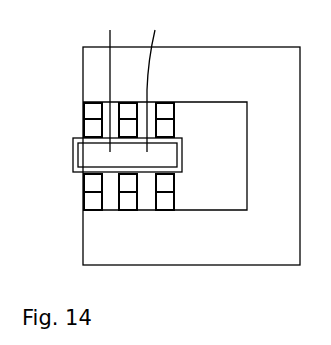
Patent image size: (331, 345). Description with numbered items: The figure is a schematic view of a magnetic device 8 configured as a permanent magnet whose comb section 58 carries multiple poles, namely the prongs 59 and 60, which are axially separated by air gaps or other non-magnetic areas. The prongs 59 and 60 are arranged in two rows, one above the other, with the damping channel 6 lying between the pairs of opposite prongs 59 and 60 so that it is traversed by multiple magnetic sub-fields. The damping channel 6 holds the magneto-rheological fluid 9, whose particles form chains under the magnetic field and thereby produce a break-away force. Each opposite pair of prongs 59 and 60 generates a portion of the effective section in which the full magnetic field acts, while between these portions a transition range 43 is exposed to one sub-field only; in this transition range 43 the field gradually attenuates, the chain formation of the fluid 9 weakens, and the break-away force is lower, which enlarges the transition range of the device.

The magnetic device 8 is at (83, 47).
The comb section 58 is at (60, 75).
The prongs 60 is at (168, 103).
The prongs 59 is at (160, 203).
The damping channel 6 is at (88, 149).
The magneto-rheological fluid 9 is at (93, 161).
The transition range 43 is at (133, 82).